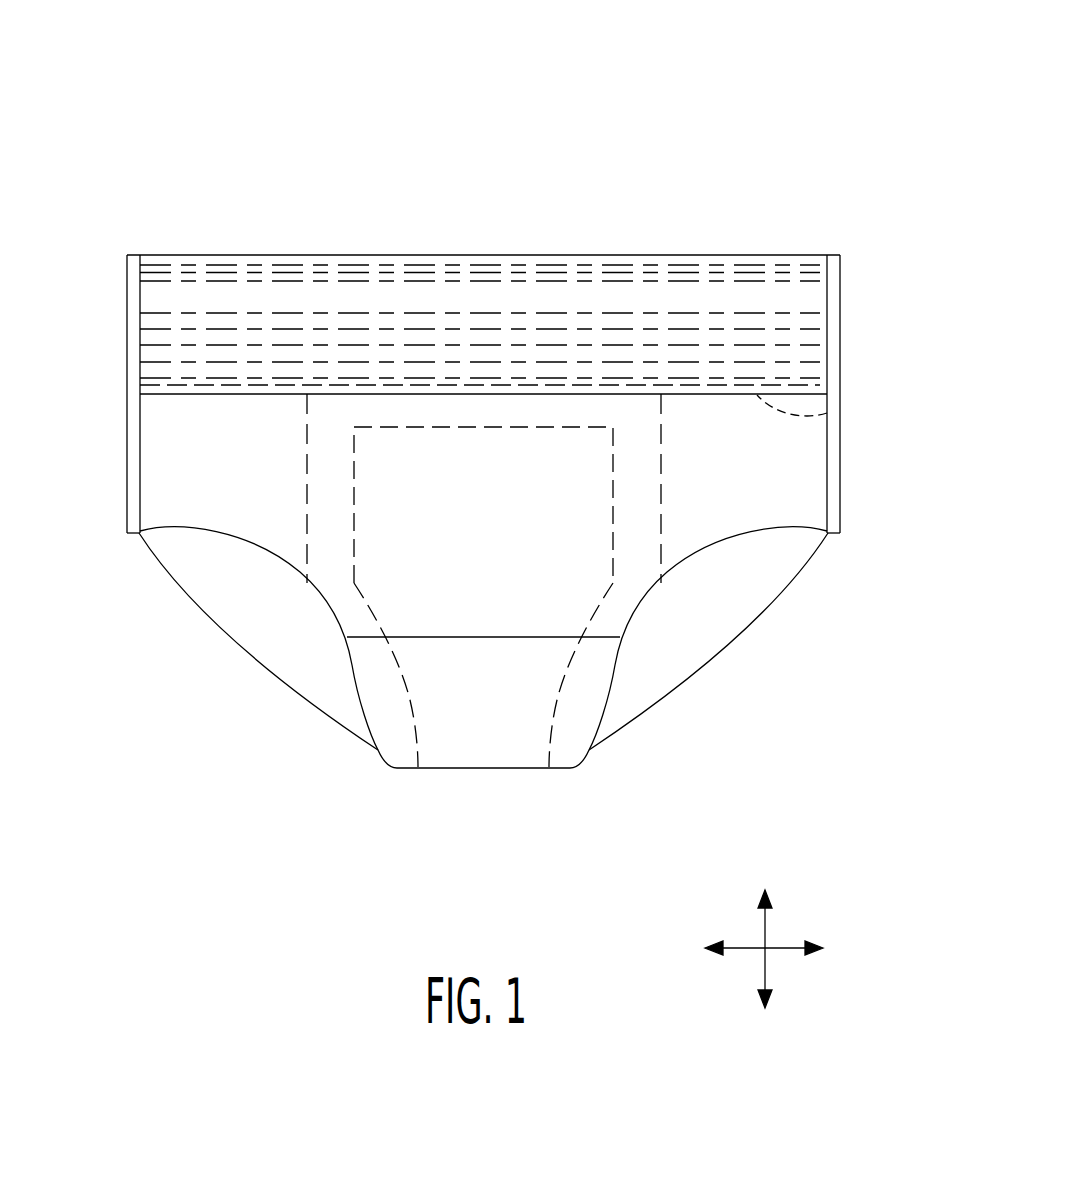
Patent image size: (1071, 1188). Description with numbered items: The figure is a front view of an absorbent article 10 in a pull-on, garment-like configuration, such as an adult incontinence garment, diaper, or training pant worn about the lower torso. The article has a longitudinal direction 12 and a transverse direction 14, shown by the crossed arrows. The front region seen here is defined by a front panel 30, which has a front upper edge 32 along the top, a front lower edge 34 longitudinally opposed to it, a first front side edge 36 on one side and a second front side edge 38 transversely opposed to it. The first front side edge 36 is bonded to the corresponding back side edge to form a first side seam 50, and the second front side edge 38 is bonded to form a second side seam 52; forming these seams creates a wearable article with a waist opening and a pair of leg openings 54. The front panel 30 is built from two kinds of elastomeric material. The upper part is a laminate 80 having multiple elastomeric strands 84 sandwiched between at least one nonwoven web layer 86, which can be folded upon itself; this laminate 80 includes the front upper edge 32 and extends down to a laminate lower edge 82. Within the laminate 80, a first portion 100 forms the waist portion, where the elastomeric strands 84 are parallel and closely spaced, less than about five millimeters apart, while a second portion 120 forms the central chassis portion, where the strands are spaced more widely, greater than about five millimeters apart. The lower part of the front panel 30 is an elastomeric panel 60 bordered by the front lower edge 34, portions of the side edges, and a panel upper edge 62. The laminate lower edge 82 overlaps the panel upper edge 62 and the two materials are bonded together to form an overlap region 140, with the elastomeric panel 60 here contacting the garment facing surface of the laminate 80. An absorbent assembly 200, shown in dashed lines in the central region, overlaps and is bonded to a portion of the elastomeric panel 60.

The absorbent article 10 is at (683, 97).
The longitudinal direction 12 is at (760, 930).
The transverse direction 14 is at (792, 947).
The front panel 30 is at (168, 492).
The front upper edge 32 is at (364, 256).
The front lower edge 34 is at (475, 637).
The first front side edge 36 is at (127, 463).
The second front side edge 38 is at (840, 355).
The first side seam 50 is at (133, 518).
The second side seam 52 is at (837, 515).
The leg openings 54 is at (267, 623).
The elastomeric panel 60 is at (808, 488).
The panel upper edge 62 is at (828, 412).
The laminate 80 is at (152, 302).
The laminate lower edge 82 is at (167, 395).
The elastomeric strands 84 is at (607, 277).
The nonwoven web layer 86 is at (257, 268).
The first portion 100 is at (125, 258).
The second portion 120 is at (125, 312).
The overlap region 140 is at (847, 375).
The absorbent assembly 200 is at (367, 703).